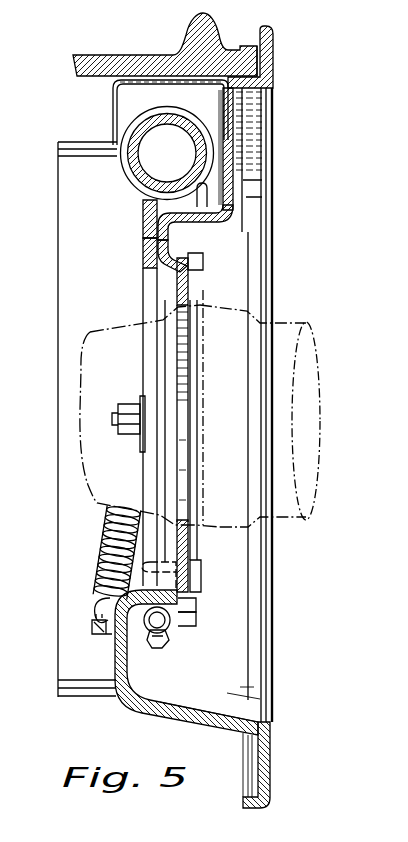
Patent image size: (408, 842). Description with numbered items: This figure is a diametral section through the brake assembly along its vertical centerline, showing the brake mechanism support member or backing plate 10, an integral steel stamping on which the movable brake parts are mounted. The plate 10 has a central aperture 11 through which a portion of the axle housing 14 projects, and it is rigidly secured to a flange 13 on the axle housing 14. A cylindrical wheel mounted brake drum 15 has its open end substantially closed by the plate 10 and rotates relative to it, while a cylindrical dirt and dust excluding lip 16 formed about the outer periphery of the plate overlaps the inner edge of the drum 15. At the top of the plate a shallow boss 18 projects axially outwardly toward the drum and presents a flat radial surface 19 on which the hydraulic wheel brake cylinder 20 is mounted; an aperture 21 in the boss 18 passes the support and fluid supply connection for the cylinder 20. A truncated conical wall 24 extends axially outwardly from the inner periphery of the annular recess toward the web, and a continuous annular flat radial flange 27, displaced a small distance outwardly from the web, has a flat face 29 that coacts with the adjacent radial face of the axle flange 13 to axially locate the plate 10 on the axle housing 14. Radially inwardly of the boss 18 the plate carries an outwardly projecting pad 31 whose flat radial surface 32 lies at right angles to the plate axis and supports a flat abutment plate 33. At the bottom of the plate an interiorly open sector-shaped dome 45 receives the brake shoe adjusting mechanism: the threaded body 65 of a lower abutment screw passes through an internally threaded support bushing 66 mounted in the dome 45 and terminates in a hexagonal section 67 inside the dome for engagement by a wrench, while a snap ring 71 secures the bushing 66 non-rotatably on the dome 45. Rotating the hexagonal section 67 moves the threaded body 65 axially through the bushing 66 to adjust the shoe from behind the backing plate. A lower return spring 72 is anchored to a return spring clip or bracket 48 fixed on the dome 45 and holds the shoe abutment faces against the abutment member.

The brake mechanism support member 10 is at (243, 207).
The central aperture 11 is at (205, 524).
The flange 13 is at (199, 579).
The axle housing 14 is at (300, 518).
The brake drum 15 is at (134, 62).
The dirt and dust excluding lip 16 is at (259, 25).
The boss 18 is at (247, 99).
The flat radial surface 19 is at (227, 184).
The hydraulic wheel brake cylinder 20 is at (127, 183).
The aperture 21 is at (233, 164).
The truncated conical wall 24 is at (200, 726).
The annular flat radial flange 27 is at (189, 293).
The flat face 29 is at (188, 278).
The pad 31 is at (168, 241).
The flat radial surface 32 is at (143, 240).
The abutment plate 33 is at (148, 263).
The dome 45 is at (128, 669).
The return spring clip 48 is at (94, 624).
The threaded body 65 is at (170, 632).
The support bushing 66 is at (196, 603).
The hexagonal section 67 is at (162, 647).
The snap ring 71 is at (197, 619).
The lower return spring 72 is at (113, 541).